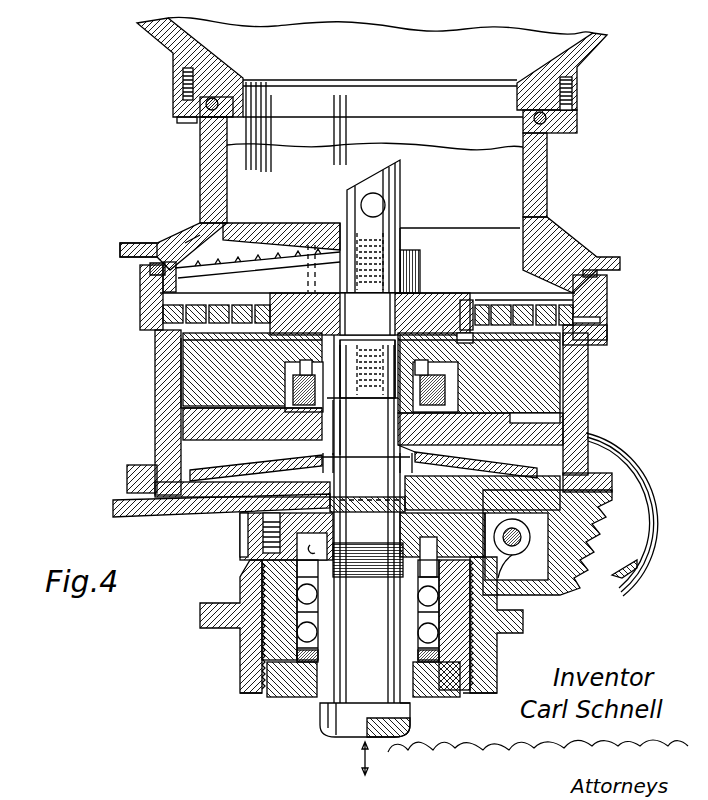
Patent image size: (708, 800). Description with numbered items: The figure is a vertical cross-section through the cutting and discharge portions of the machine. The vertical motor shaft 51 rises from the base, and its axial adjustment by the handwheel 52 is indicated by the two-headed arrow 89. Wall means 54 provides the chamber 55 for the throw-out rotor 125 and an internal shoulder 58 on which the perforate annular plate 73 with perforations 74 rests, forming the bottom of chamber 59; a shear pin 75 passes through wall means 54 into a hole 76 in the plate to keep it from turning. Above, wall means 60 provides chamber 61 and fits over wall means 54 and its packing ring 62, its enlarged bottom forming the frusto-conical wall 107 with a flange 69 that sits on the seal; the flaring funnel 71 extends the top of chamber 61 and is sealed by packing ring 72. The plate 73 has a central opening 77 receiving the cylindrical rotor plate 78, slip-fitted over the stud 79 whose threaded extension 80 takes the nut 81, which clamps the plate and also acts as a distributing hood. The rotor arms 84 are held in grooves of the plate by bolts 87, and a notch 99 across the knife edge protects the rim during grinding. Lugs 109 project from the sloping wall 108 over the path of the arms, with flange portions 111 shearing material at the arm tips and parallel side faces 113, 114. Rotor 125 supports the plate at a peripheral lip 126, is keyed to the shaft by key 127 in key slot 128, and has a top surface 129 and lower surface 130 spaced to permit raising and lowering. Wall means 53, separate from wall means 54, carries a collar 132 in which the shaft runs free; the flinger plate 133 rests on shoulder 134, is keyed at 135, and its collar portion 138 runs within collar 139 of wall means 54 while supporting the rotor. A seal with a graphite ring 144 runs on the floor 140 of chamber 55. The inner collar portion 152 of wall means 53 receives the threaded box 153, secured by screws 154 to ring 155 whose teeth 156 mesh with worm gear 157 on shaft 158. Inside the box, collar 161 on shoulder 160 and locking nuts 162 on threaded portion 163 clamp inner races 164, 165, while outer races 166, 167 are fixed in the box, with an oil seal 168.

The vertical motor shaft 51 is at (335, 722).
The handwheel 52 is at (600, 450).
The wall means 53 is at (160, 505).
The wall means 54 is at (155, 378).
The chamber 55 is at (190, 409).
The internal shoulder 58 is at (147, 340).
The chamber 59 is at (524, 290).
The wall means 60 is at (557, 150).
The chamber 61 is at (367, 205).
The packing ring 62 is at (150, 270).
The bottom flange 69 is at (120, 247).
The flaring funnel 71 is at (562, 65).
The packing ring 72 is at (213, 110).
The perforate annular plate 73 is at (498, 305).
The perforations 74 is at (552, 303).
The shear pin 75 is at (607, 312).
The hole 76 is at (607, 333).
The central opening 77 is at (462, 300).
The rotor plate 78 is at (425, 295).
The stud 79 is at (367, 314).
The threaded extension 80 is at (402, 215).
The nut 81 is at (373, 190).
The rotor arms 84 is at (284, 252).
The bolts 87 is at (308, 261).
The two-headed arrow 89 is at (357, 758).
The notch 99 is at (280, 290).
The frusto-conical wall 107 is at (196, 222).
The sloping wall 108 is at (230, 243).
The lugs 109 is at (185, 243).
The flange portions 111 is at (168, 280).
The side face 113 is at (418, 233).
The side face 114 is at (343, 226).
The throw-out rotor 125 is at (540, 371).
The peripheral lip 126 is at (280, 338).
The key 127 is at (367, 376).
The key slot 128 is at (362, 403).
The top surface 129 is at (520, 333).
The lower surface 130 is at (233, 430).
The collar 132 is at (334, 465).
The flinger plate 133 is at (520, 464).
The shoulder 134 is at (358, 435).
The key 135 is at (358, 418).
The collar portion 138 is at (412, 436).
The collar 139 is at (440, 378).
The floor 140 is at (580, 421).
The ring 144 is at (305, 466).
The inner collar portion 152 is at (240, 672).
The threaded box 153 is at (245, 697).
The screws 154 is at (262, 515).
The ring 155 is at (468, 530).
The teeth 156 is at (242, 540).
The worm gear 157 is at (525, 575).
The shaft 158 is at (512, 548).
The shoulder 160 is at (360, 700).
The collar 161 is at (411, 705).
The locking nuts 162 is at (312, 546).
The threaded portion 163 is at (367, 545).
The inner race 164 is at (325, 600).
The inner race 165 is at (325, 633).
The outer race 166 is at (285, 598).
The outer race 167 is at (290, 635).
The oil seal 168 is at (292, 700).